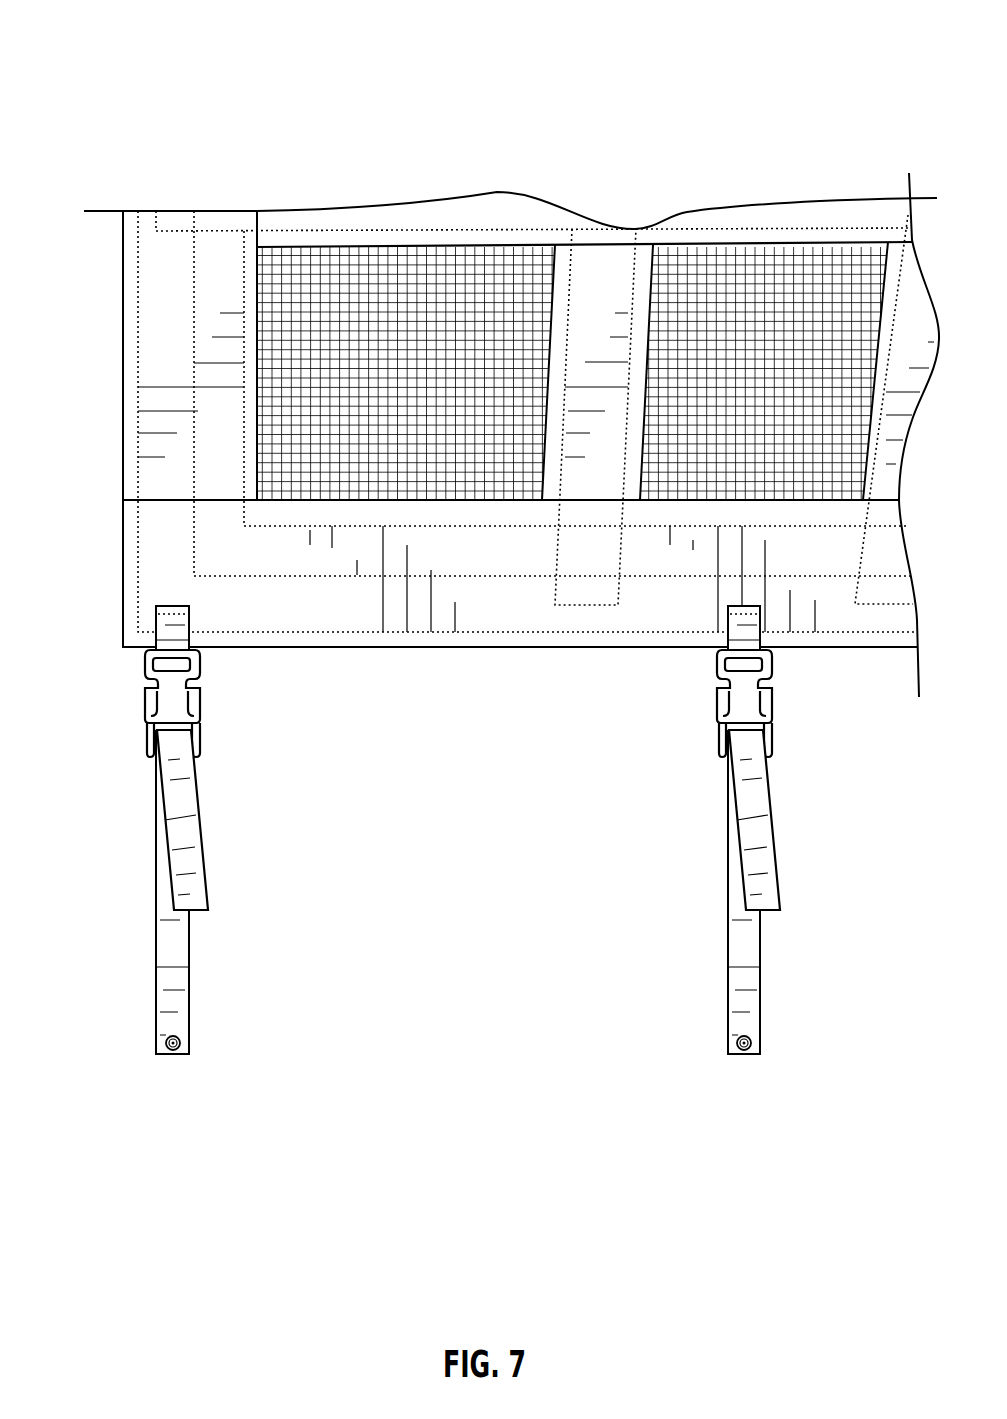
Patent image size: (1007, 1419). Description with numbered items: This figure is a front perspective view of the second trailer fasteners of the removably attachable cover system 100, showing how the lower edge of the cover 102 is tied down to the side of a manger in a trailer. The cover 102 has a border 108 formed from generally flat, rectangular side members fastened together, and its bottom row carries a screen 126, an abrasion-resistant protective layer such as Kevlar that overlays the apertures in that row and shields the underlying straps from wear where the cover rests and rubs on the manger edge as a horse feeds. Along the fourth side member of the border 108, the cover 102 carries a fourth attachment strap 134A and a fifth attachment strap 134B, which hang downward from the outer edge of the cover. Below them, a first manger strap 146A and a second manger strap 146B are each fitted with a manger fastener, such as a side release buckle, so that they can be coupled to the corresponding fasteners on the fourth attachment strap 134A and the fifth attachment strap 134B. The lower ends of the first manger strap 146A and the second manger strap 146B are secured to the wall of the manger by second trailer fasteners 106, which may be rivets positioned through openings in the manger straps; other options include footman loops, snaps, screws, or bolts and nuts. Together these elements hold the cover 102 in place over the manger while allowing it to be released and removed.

The removably attachable cover system 100 is at (250, 42).
The cover 102 is at (208, 285).
The second trailer fasteners 106 is at (163, 1042).
The border 108 is at (177, 447).
The screen 126 is at (427, 313).
The fourth attachment strap 134A is at (173, 630).
The fifth attachment strap 134B is at (743, 633).
The first manger strap 146A is at (188, 953).
The second manger strap 146B is at (748, 953).